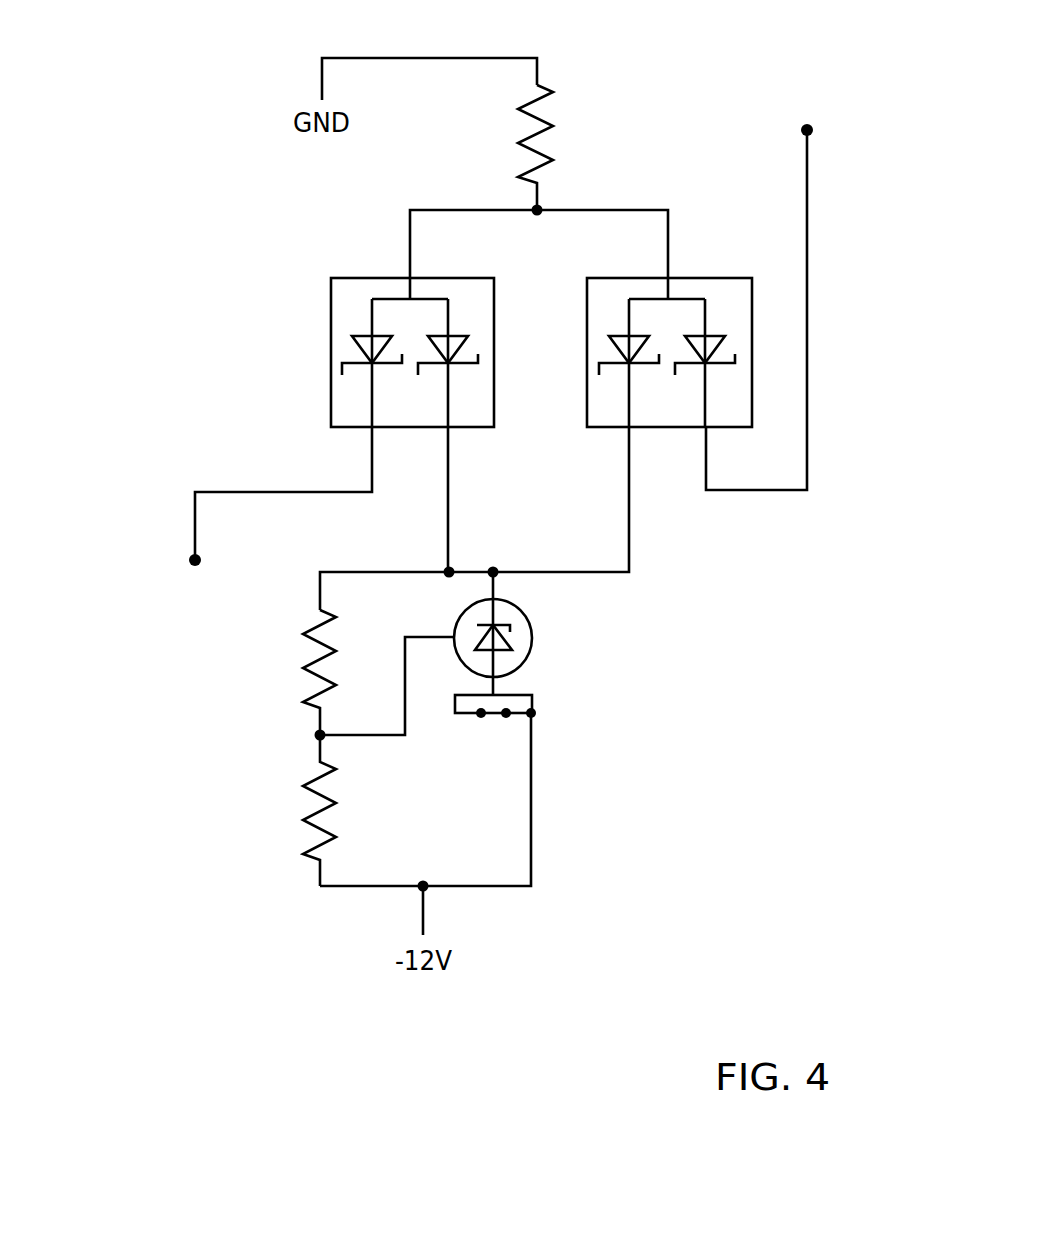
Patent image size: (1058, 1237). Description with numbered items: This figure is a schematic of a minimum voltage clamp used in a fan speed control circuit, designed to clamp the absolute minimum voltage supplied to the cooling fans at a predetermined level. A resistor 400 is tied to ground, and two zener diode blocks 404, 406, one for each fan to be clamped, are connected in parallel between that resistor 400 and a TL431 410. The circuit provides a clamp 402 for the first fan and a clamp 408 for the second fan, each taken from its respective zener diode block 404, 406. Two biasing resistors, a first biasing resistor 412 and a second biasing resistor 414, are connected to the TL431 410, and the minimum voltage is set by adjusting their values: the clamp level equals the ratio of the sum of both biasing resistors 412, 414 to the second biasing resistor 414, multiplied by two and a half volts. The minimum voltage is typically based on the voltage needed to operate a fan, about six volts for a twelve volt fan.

The resistor 400 is at (552, 110).
The clamp 402 is at (807, 165).
The zener diode block 404 is at (752, 278).
The zener diode block 406 is at (331, 325).
The clamp 408 is at (195, 527).
The TL431 410 is at (532, 648).
The biasing resistor R1 412 is at (305, 686).
The biasing resistor R2 414 is at (305, 837).